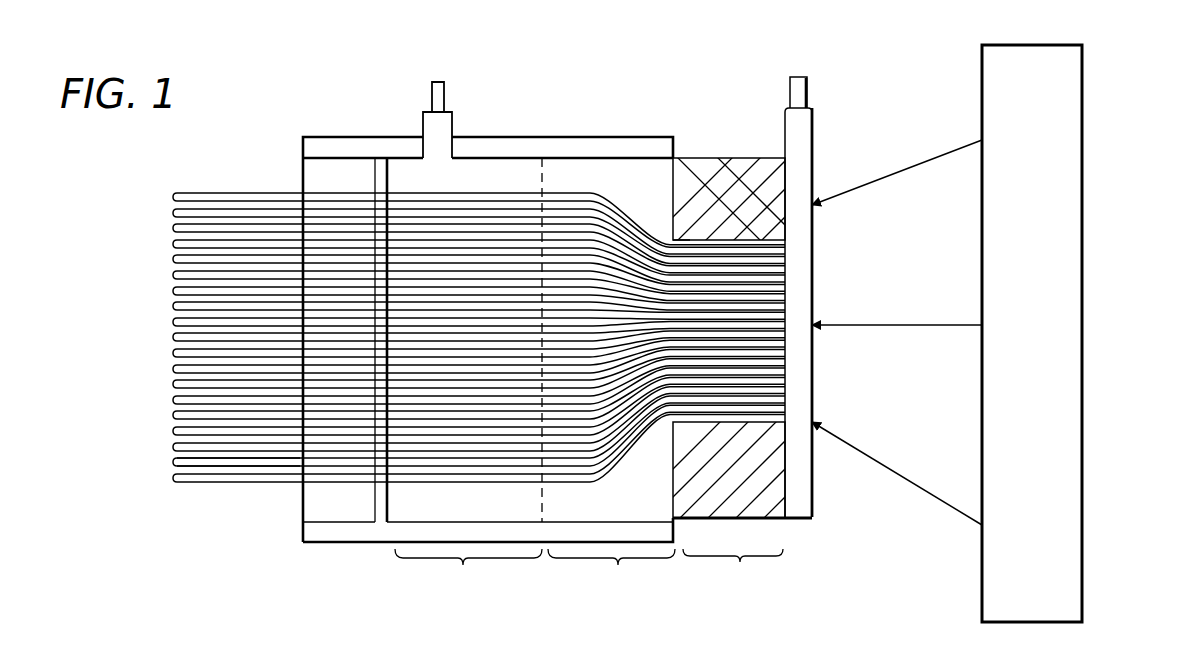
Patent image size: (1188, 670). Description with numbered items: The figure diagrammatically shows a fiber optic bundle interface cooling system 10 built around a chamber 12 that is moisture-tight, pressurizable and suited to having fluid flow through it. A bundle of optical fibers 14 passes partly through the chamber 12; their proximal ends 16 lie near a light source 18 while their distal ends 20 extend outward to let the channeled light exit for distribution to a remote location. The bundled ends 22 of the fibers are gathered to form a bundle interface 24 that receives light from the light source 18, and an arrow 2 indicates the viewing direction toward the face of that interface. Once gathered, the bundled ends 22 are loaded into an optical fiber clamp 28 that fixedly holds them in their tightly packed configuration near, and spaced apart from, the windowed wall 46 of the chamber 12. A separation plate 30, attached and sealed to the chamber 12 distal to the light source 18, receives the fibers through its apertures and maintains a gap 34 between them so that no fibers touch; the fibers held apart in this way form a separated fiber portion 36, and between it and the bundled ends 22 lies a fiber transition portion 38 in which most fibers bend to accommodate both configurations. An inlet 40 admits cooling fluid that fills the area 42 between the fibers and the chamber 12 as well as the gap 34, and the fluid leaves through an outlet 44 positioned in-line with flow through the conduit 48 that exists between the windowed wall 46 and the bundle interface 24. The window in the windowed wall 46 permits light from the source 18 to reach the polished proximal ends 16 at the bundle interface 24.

The arrow 2 is at (792, 388).
The fiber optic bundle interface cooling system 10 is at (842, 80).
The chamber 12 is at (387, 138).
The optical fibers 14 is at (523, 190).
The proximal ends 16 is at (787, 258).
The light source 18 is at (1062, 333).
The distal ends 20 is at (175, 227).
The bundled ends 22 is at (695, 240).
The bundle interface 24 is at (740, 562).
The optical fiber clamp 28 is at (770, 500).
The separation plate 30 is at (373, 505).
The gap 34 is at (258, 448).
The separated fiber portion 36 is at (465, 565).
The fiber transition portion 38 is at (618, 565).
The inlet 40 is at (423, 120).
The area 42 is at (452, 175).
The outlet 44 is at (812, 128).
The windowed wall 46 is at (808, 487).
The conduit 48 is at (798, 163).